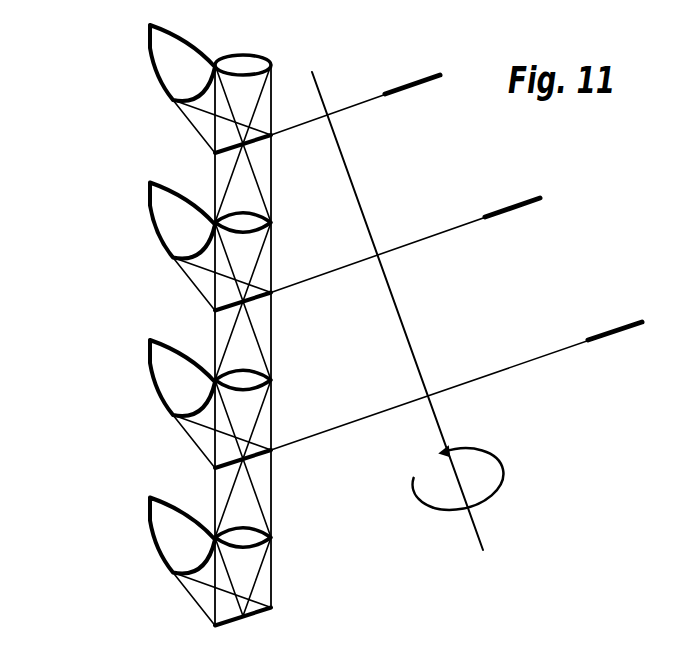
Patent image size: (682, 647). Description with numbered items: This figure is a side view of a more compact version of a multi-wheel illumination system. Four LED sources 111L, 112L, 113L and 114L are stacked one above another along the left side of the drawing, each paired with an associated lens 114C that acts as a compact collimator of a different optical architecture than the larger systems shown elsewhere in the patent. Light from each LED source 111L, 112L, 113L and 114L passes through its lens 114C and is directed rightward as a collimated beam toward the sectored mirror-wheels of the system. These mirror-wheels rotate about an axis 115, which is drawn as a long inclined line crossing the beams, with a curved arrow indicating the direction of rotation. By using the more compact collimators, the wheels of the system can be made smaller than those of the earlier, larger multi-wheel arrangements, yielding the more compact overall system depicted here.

The LED source 111L is at (178, 63).
The LED source 112L is at (178, 217).
The LED source 113L is at (182, 376).
The LED source 114L is at (180, 534).
The lens 114C is at (160, 548).
The axis 115 is at (430, 311).